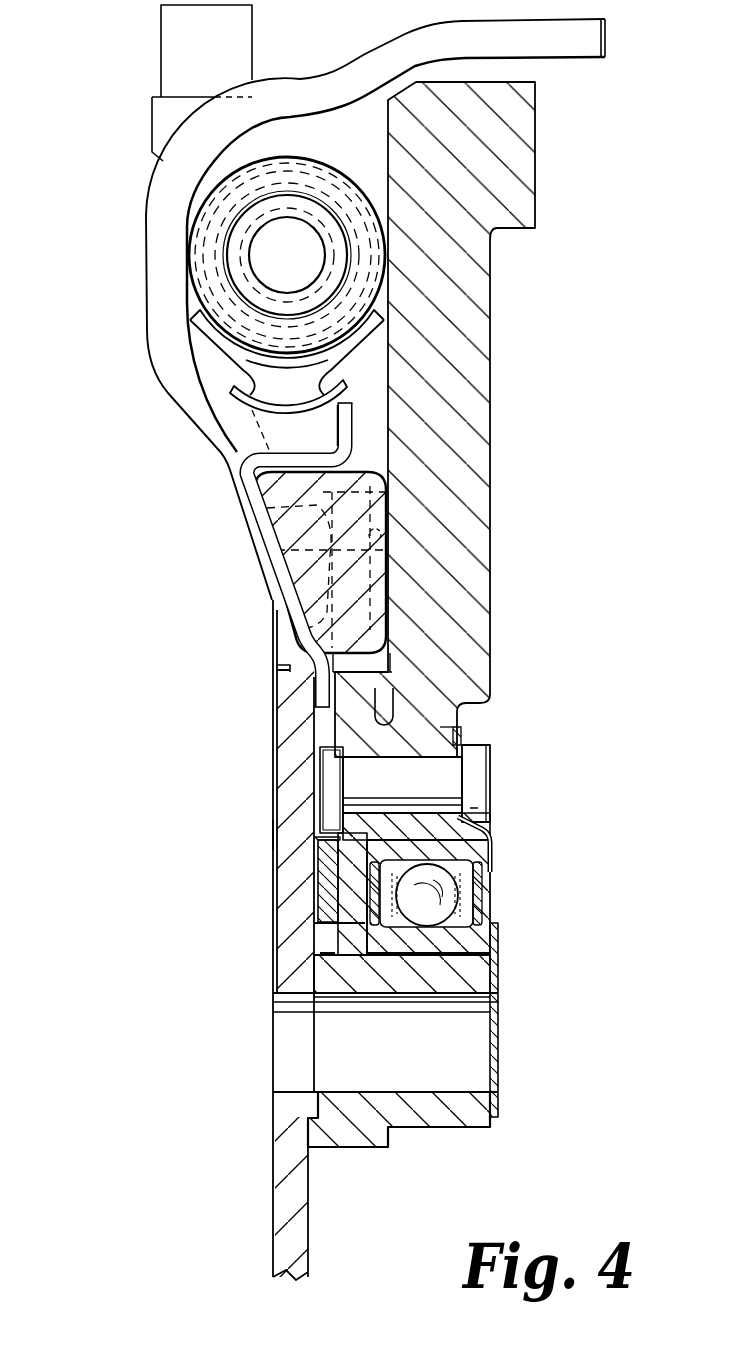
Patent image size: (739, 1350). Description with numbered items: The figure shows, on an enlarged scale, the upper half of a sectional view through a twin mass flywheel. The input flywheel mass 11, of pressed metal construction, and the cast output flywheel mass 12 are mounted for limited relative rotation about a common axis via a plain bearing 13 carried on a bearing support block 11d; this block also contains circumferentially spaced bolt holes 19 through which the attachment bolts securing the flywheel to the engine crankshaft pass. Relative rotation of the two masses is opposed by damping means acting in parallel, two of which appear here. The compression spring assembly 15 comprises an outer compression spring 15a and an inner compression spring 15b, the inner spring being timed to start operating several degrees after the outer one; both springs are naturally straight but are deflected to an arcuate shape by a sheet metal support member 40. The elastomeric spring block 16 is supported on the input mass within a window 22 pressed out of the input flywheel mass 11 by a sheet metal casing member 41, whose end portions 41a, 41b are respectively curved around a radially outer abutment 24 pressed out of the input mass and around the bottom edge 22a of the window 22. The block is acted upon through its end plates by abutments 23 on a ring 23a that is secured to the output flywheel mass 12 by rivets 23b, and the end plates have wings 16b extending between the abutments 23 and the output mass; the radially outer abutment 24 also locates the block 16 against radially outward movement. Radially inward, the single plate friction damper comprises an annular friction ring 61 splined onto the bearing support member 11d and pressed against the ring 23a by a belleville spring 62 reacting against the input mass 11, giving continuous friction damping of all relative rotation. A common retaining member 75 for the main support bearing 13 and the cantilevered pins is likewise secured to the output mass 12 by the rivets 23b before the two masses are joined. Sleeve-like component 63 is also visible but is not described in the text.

The input flywheel mass 11 is at (325, 940).
The bearing support block 11d is at (297, 972).
The output flywheel mass 12 is at (505, 186).
The plain bearing 13 is at (455, 946).
The compression spring assembly 15 is at (210, 223).
The outer compression spring 15a is at (240, 190).
The inner compression spring 15b is at (233, 256).
The elastomeric spring block 16 is at (416, 563).
The wings 16b is at (382, 602).
The bolt holes 19 is at (410, 1048).
The window 22 is at (237, 459).
The bottom edge of window 22a is at (275, 663).
The abutments 23 is at (387, 527).
The ring 23a is at (357, 708).
The rivets 23b is at (443, 777).
The radially outer abutment 24 is at (318, 433).
The sheet metal support member 40 is at (220, 346).
The sheet metal casing member 41 is at (350, 536).
The end portion of casing member 41a is at (353, 413).
The end portion of casing member 41b is at (310, 688).
The annular friction ring 61 is at (276, 833).
The belleville spring 62 is at (333, 945).
The sleeve 63 is at (330, 860).
The common retaining member 75 is at (490, 856).